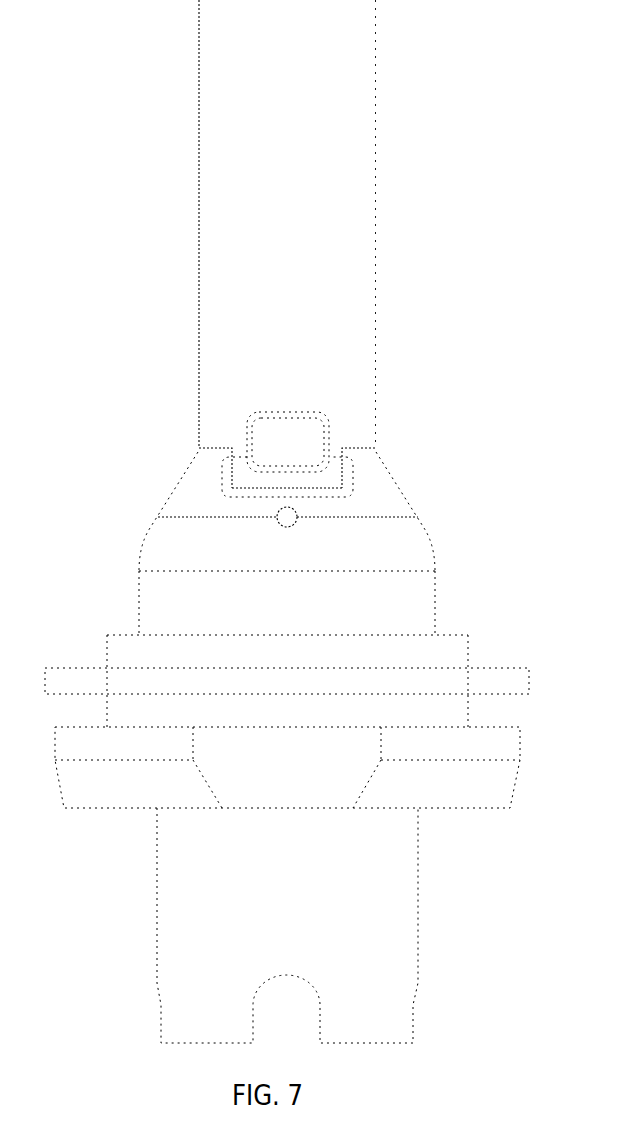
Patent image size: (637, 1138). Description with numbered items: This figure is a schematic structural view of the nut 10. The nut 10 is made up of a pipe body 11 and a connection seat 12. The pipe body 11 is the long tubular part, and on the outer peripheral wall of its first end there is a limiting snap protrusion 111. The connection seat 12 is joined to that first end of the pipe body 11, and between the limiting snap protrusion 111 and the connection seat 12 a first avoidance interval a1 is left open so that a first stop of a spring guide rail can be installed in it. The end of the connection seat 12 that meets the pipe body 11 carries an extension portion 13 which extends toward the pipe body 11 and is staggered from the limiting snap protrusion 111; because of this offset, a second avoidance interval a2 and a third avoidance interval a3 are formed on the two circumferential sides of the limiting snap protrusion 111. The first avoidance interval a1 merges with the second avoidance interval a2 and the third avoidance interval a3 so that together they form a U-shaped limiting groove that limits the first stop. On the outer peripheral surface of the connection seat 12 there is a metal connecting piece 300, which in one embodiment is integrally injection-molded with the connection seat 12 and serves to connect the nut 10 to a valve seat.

The nut 10 is at (85, 86).
The pipe body 11 is at (350, 89).
The limiting snap protrusion 111 is at (308, 435).
The connection seat 12 is at (414, 600).
The extension portion 13 is at (380, 472).
The metal connecting piece 300 is at (77, 672).
The first avoidance interval a1 is at (285, 483).
The second avoidance interval a2 is at (333, 462).
The third avoidance interval a3 is at (240, 455).